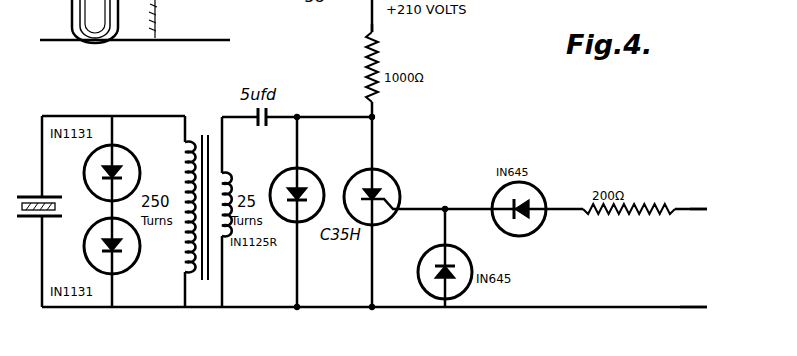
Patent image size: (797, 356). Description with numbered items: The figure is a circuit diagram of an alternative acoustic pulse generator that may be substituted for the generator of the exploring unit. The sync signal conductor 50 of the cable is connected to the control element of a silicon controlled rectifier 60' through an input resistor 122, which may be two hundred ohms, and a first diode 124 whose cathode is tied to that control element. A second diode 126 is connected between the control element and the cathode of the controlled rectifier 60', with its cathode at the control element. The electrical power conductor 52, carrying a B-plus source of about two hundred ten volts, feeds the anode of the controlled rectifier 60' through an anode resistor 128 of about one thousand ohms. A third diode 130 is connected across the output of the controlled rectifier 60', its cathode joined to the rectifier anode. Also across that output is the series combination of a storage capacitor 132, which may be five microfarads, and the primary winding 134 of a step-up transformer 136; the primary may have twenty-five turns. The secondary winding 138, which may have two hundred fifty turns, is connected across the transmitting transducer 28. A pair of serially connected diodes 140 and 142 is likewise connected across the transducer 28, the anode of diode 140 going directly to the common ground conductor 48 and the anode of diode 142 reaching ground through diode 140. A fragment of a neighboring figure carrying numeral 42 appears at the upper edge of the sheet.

The transmitting transducer 28 is at (48, 196).
The adjacent figure part 42 is at (100, 17).
The common ground conductor 48 is at (688, 296).
The sync signal conductor 50 is at (690, 206).
The electrical power conductor 52 is at (372, 27).
The silicon controlled rectifier 60' is at (382, 178).
The resistor 122 is at (652, 214).
The first diode 124 is at (540, 231).
The second diode 126 is at (423, 264).
The anode resistor 128 is at (378, 58).
The third diode 130 is at (311, 171).
The storage capacitor 132 is at (256, 118).
The primary winding 134 is at (224, 240).
The step-up transformer 136 is at (209, 122).
The secondary winding 138 is at (185, 262).
The diode 140 is at (86, 238).
The diode 142 is at (127, 153).